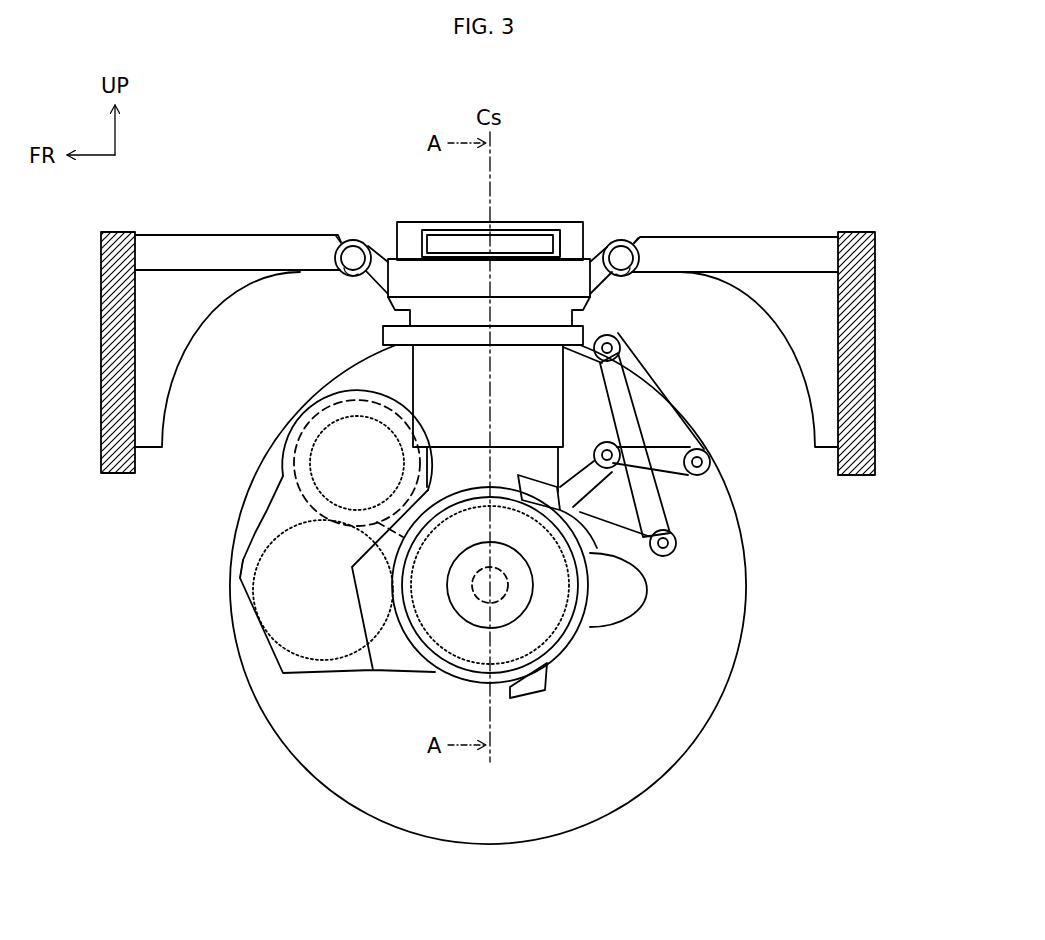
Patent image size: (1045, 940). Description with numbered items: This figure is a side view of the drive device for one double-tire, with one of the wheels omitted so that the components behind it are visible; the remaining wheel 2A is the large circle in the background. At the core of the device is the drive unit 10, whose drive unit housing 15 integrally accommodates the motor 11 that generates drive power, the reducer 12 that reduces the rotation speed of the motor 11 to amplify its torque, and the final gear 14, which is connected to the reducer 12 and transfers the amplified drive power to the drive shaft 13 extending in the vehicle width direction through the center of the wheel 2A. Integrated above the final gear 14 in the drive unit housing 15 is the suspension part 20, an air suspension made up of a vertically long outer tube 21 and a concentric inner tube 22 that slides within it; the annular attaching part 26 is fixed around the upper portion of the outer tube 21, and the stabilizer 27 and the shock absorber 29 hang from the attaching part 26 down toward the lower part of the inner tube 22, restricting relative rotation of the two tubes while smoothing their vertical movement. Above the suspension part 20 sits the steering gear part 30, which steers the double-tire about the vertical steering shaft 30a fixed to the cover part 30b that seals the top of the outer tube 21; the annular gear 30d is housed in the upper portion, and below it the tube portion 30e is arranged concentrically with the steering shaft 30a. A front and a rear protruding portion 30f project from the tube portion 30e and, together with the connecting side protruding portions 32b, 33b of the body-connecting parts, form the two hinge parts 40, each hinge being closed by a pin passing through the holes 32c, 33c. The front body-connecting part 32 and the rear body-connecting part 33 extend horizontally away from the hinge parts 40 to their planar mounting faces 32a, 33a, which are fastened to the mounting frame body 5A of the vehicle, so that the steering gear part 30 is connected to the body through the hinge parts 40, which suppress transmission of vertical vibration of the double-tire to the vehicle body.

The wheel 2A is at (662, 763).
The mounting frame body 5A is at (101, 318).
The drive unit 10 is at (236, 558).
The motor 11 is at (300, 497).
The reducer 12 is at (256, 626).
The drive shaft 13 is at (502, 600).
The final gear 14 is at (445, 660).
The drive unit housing 15 is at (240, 590).
The suspension part 20 is at (377, 382).
The outer tube 21 is at (427, 368).
The inner tube 22 is at (451, 460).
The attaching part 26 is at (383, 333).
The stabilizer 27 is at (687, 416).
The shock absorber 29 is at (667, 510).
The steering gear part 30 is at (403, 192).
The steering shaft 30a is at (505, 240).
The cover part 30b is at (560, 235).
The annular gear 30d is at (452, 240).
The tube portion 30e is at (403, 305).
The protruding portion 30f is at (375, 228).
The front body-connecting part 32 is at (248, 227).
The mounting face 32a is at (101, 372).
The connecting side protruding portion 32b is at (337, 228).
The hole 32c is at (345, 276).
The rear body-connecting part 33 is at (797, 227).
The mounting face 33a is at (875, 385).
The connecting side protruding portion 33b is at (640, 228).
The hole 33c is at (637, 276).
The hinge part 40 is at (353, 228).